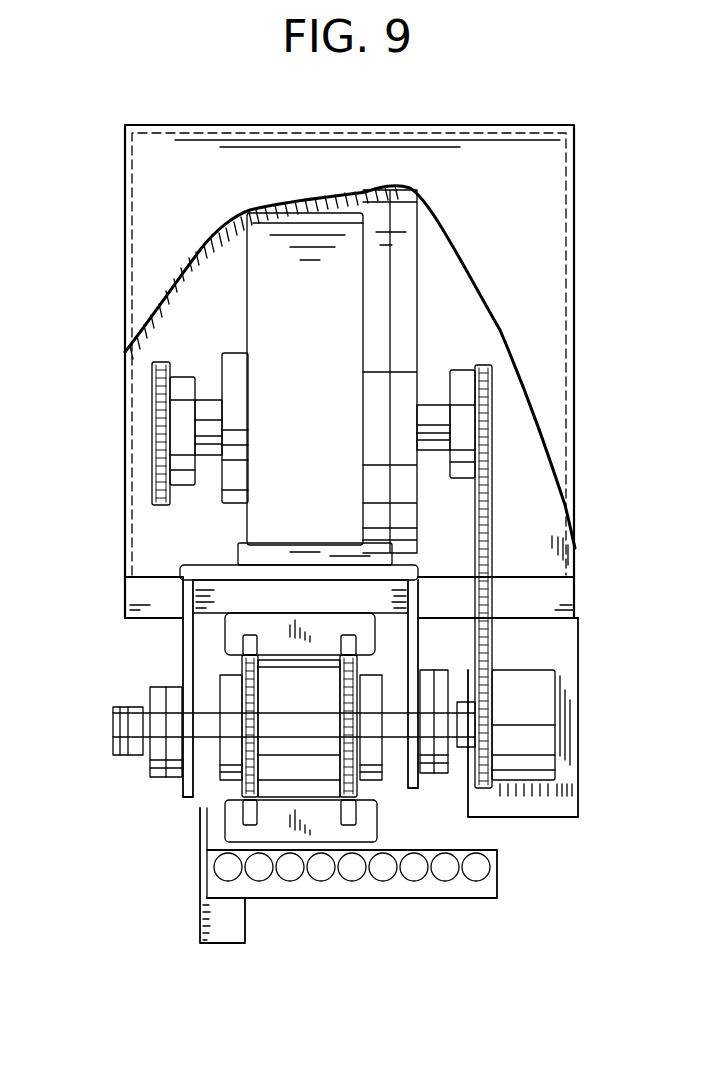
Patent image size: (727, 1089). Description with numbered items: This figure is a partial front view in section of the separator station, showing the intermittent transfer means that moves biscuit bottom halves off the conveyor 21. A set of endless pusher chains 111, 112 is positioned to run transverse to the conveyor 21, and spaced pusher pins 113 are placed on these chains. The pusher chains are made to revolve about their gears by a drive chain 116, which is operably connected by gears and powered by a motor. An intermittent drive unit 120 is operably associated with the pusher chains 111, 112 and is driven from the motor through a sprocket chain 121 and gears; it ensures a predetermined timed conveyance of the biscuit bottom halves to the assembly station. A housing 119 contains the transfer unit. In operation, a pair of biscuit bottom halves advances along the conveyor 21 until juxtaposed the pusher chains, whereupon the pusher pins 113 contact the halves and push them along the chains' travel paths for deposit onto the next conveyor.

The conveyor 21 is at (395, 878).
The pusher chain 111 is at (360, 782).
The pusher chain 112 is at (242, 786).
The pusher pins 113 is at (350, 793).
The drive chain 116 is at (495, 652).
The housing 119 is at (125, 457).
The intermittent drive unit 120 is at (283, 470).
The sprocket chain 121 is at (150, 392).